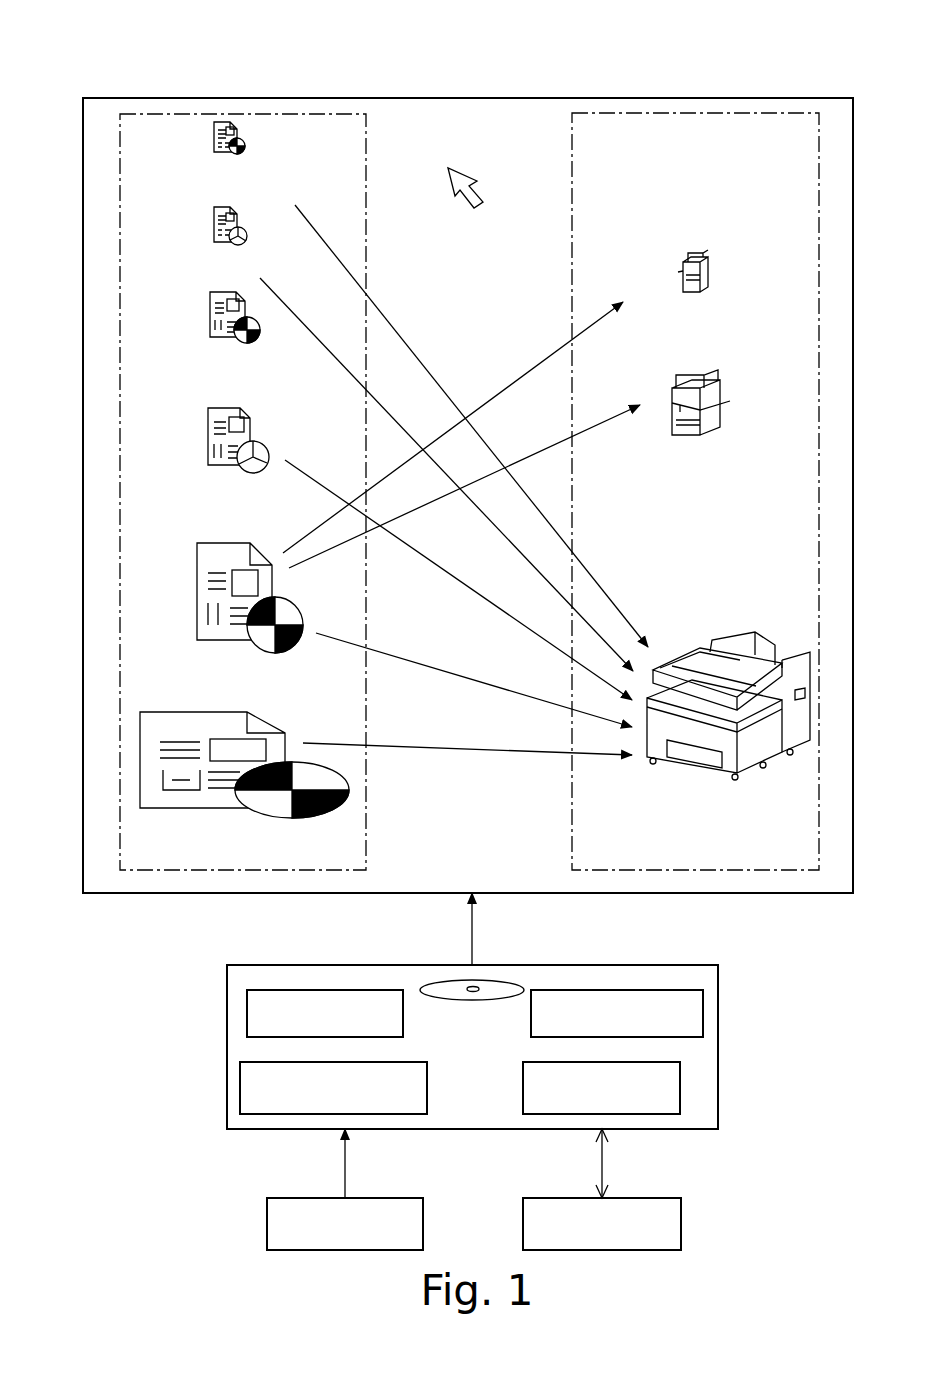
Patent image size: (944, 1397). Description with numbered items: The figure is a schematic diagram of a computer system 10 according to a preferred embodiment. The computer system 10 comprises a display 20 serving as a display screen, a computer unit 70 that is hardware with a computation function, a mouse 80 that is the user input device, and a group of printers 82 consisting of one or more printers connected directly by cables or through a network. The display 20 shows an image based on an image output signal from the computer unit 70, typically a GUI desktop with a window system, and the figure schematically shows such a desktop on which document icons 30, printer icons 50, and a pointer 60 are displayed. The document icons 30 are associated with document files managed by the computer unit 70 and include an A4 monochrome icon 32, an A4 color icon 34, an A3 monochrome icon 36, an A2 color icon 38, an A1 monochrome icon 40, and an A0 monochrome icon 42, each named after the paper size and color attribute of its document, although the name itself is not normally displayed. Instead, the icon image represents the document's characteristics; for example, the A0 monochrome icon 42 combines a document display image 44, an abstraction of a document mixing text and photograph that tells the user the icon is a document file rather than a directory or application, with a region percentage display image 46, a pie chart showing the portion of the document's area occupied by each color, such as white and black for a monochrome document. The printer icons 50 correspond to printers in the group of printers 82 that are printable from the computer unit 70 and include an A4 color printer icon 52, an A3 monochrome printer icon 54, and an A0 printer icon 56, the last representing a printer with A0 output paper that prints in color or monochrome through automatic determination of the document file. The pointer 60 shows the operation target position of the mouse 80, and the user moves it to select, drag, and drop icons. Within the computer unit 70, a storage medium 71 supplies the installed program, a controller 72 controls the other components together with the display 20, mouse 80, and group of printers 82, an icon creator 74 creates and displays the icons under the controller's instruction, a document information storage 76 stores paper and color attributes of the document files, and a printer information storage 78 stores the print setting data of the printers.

The computer system 10 is at (130, 80).
The display 20 is at (586, 97).
The document icons 30 is at (366, 193).
The A4 monochrome icon 32 is at (214, 140).
The A4 color icon 34 is at (214, 228).
The A3 monochrome icon 36 is at (210, 312).
The A2 color icon 38 is at (208, 447).
The A1 monochrome icon 40 is at (197, 613).
The A0 monochrome icon 42 is at (281, 785).
The document display image 44 is at (286, 735).
The region percentage display image 46 is at (347, 778).
The printer icons 50 is at (572, 262).
The A4 color printer icon 52 is at (683, 290).
The A3 monochrome printer icon 54 is at (672, 430).
The A0 printer icon 56 is at (677, 767).
The pointer 60 is at (463, 168).
The computer unit 70 is at (459, 1011).
The storage medium 71 is at (505, 982).
The controller 72 is at (247, 1013).
The icon creator 74 is at (703, 1012).
The document information storage 76 is at (240, 1094).
The printer information storage 78 is at (680, 1086).
The mouse 80 is at (267, 1220).
The group of printers 82 is at (681, 1225).